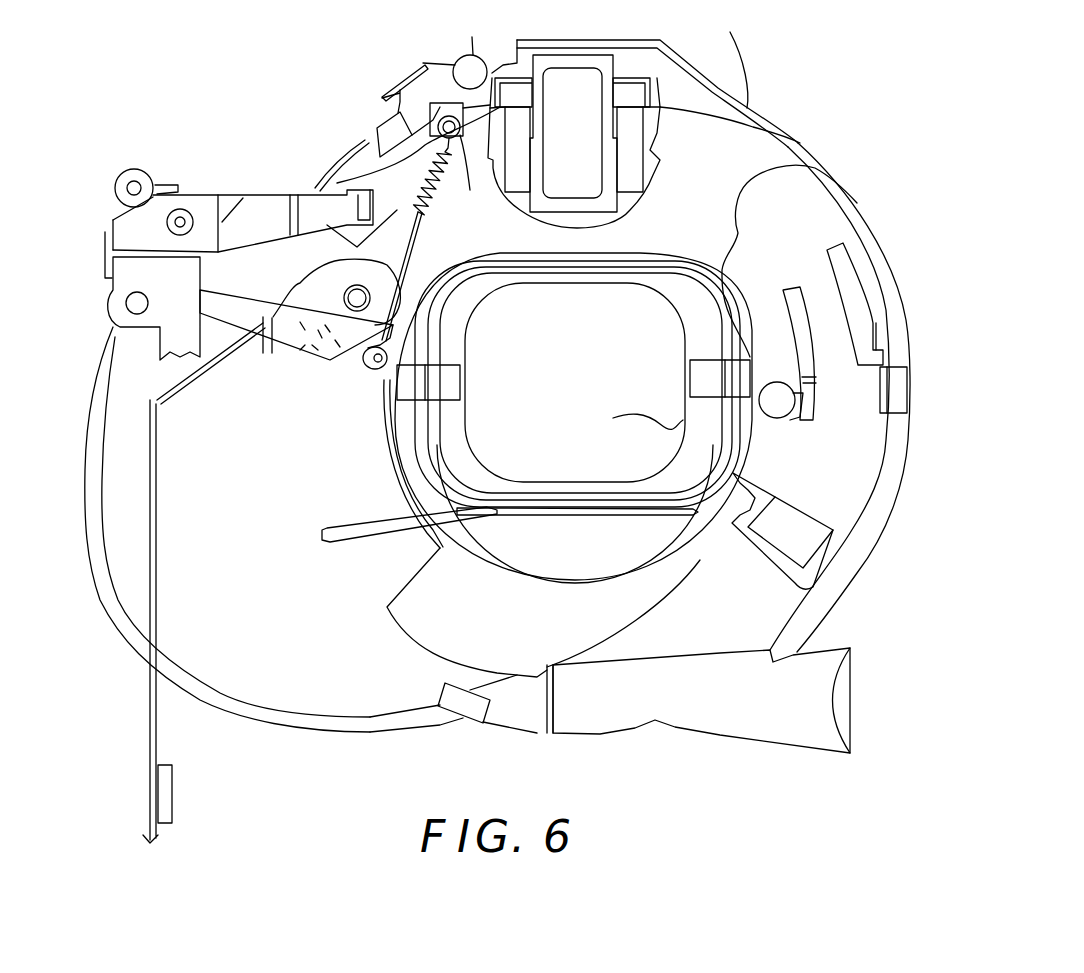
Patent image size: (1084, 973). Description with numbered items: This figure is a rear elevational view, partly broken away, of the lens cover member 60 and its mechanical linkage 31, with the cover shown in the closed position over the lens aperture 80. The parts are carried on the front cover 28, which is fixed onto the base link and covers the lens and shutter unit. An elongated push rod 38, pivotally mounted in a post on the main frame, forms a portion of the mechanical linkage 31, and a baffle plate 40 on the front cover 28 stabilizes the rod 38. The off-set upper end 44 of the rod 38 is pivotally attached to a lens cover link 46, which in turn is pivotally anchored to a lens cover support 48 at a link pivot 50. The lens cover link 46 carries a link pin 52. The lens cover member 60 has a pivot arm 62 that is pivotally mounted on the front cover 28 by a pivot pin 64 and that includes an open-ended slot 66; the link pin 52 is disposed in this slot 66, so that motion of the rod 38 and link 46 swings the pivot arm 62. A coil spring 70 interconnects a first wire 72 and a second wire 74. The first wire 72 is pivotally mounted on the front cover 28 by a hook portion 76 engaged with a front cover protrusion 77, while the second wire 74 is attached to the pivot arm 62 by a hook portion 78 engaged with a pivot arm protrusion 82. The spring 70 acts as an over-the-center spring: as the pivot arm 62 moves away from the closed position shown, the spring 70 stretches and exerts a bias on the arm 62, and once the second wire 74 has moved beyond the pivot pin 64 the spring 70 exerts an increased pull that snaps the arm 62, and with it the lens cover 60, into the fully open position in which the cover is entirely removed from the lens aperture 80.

The front cover 28 is at (268, 632).
The mechanical linkage 31 is at (245, 375).
The push rod 38 is at (158, 570).
The baffle plate 40 is at (174, 783).
The off-set upper end 44 is at (217, 365).
The lens cover link 46 is at (230, 305).
The lens cover support 48 is at (130, 268).
The link pivot 50 is at (128, 303).
The link pin 52 is at (290, 362).
The lens cover member 60 is at (628, 353).
The pivot arm 62 is at (445, 295).
The pivot pin 64 is at (335, 310).
The open-ended slot 66 is at (352, 297).
The coil spring 70 is at (378, 156).
The first wire 72 is at (377, 127).
The second wire 74 is at (413, 257).
The hook portion 76 is at (432, 103).
The front cover protrusion 77 is at (455, 160).
The hook portion 78 is at (362, 365).
The lens aperture 80 is at (631, 419).
The pivot arm protrusion 82 is at (370, 370).